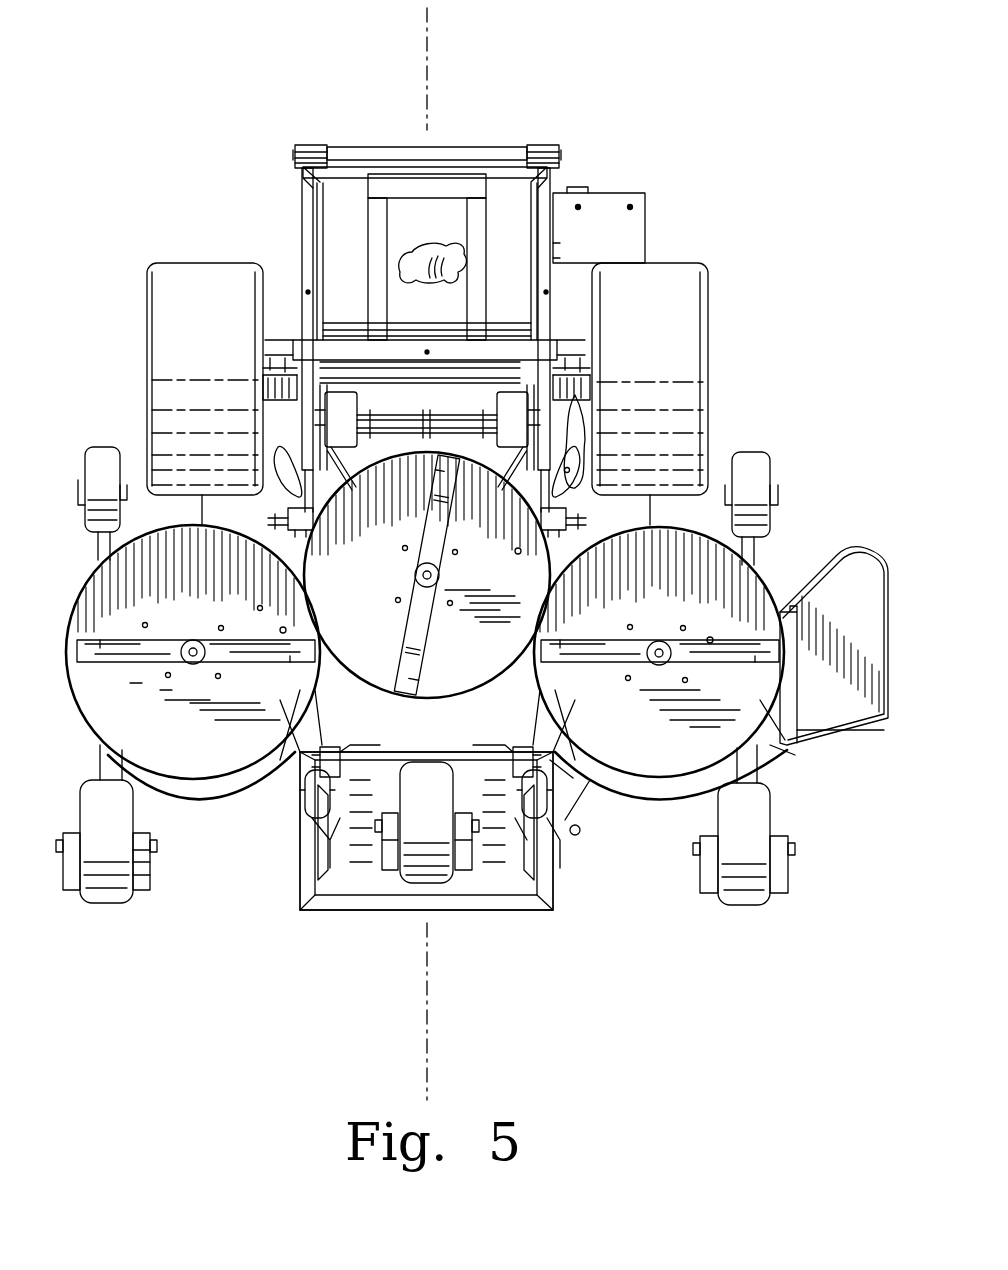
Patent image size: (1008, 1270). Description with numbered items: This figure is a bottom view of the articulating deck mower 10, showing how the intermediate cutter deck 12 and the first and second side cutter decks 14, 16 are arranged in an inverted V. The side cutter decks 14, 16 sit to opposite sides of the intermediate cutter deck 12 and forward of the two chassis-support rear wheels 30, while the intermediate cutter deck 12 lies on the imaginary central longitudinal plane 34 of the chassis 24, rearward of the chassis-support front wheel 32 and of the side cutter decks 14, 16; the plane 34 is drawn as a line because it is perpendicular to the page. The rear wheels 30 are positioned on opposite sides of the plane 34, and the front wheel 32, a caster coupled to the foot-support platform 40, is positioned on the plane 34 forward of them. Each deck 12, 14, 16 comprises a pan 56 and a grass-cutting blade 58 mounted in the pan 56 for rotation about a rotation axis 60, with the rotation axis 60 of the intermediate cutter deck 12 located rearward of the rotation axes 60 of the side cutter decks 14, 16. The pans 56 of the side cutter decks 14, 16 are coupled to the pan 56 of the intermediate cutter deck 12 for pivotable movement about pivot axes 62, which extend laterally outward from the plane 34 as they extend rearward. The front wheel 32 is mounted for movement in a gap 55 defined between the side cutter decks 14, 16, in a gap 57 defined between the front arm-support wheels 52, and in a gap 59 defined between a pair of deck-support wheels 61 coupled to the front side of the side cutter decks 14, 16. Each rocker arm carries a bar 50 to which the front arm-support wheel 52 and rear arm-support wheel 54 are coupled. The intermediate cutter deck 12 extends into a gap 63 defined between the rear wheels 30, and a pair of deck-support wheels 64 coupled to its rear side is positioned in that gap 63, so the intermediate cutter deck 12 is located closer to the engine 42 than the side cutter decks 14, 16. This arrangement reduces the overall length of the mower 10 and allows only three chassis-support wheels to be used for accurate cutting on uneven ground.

The articulating deck mower 10 is at (188, 92).
The intermediate cutter deck 12 is at (453, 706).
The first side cutter deck 14 is at (210, 815).
The second side cutter deck 16 is at (650, 828).
The chassis 24 is at (490, 148).
The chassis-support rear wheels 30 is at (192, 272).
The chassis-support front wheel 32 is at (428, 882).
The imaginary central longitudinal plane 34 is at (430, 48).
The foot-support platform 40 is at (488, 895).
The engine 42 is at (432, 288).
The bar 50 is at (128, 775).
The front arm-support wheel 52 is at (108, 903).
The rear arm-support wheel 54 is at (105, 455).
The gap 55 is at (575, 785).
The pan 56 is at (384, 722).
The gap 57 is at (150, 885).
The grass-cutting blade 58 is at (128, 646).
The gap 59 is at (334, 797).
The rotation axis 60 is at (196, 640).
The deck-support wheels 61 is at (302, 796).
The pivot axes 62 is at (300, 478).
The gap 63 is at (598, 408).
The deck-support wheels 64 is at (341, 395).